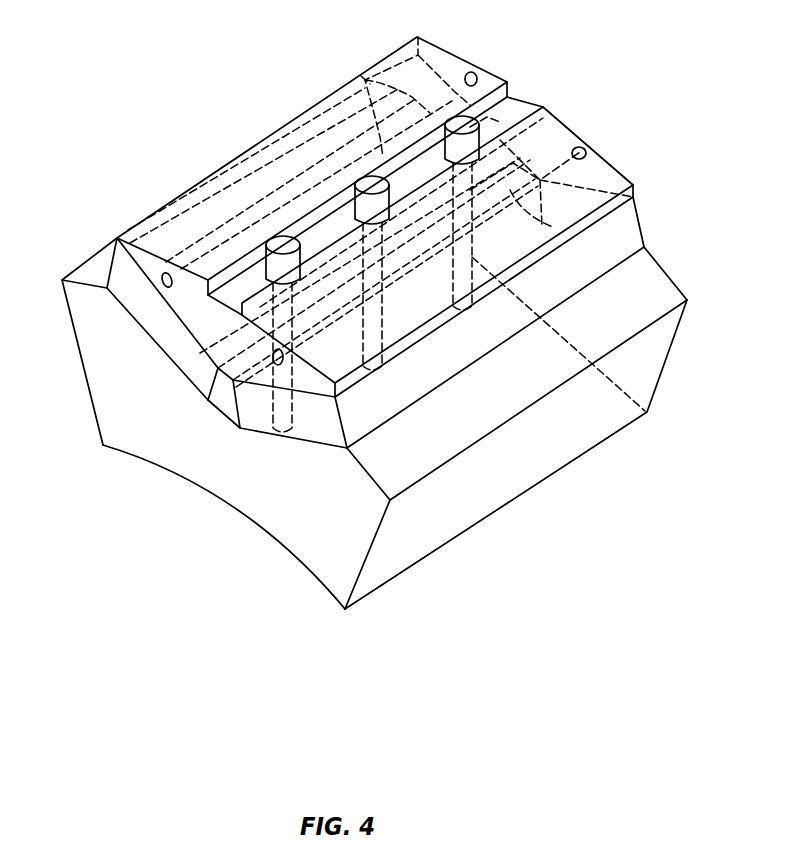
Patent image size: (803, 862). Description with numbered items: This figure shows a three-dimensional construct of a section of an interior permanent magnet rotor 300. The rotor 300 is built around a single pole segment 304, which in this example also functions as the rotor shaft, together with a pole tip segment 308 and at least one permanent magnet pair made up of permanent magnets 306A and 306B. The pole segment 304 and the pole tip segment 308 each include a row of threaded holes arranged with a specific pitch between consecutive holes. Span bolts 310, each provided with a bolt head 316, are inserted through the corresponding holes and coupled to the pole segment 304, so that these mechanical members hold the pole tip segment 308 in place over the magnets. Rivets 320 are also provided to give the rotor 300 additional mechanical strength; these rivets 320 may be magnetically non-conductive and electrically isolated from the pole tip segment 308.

The rotor 300 is at (640, 693).
The pole segment 304 is at (103, 405).
The permanent magnet 306A is at (118, 275).
The permanent magnet 306B is at (400, 393).
The pole tip segment 308 is at (416, 38).
The span bolt 310 is at (390, 213).
The bolt head 316 is at (478, 101).
The rivets 320 is at (166, 276).